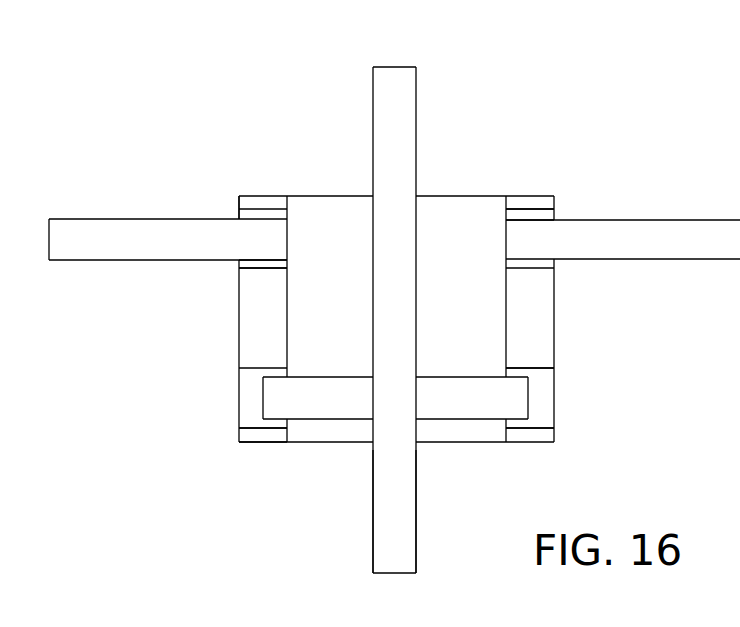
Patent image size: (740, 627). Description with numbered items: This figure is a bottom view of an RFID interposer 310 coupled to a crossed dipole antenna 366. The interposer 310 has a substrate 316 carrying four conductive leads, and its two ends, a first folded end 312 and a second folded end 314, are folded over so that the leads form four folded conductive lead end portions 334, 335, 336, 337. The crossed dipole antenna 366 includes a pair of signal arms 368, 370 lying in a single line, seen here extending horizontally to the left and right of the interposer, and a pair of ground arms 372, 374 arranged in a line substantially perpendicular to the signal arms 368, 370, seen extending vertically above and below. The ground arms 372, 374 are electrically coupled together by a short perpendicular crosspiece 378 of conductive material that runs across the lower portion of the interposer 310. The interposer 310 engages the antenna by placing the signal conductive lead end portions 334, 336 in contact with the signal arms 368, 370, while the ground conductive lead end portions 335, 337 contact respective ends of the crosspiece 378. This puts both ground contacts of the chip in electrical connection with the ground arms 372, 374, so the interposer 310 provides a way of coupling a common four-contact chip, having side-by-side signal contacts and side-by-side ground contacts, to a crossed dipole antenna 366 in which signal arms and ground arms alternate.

The crossed dipole antenna 366 is at (326, 82).
The ground arm 372 is at (400, 80).
The ground arm 374 is at (393, 528).
The substrate 316 is at (466, 188).
The interposer 310 is at (229, 173).
The folded end 312 is at (221, 194).
The folded end 314 is at (567, 181).
The signal conductive lead end portion 334 is at (238, 262).
The ground conductive lead end portion 335 is at (243, 433).
The signal conductive lead end portion 336 is at (545, 213).
The ground conductive lead end portion 337 is at (547, 400).
The crosspiece 378 is at (452, 403).
The signal arm 368 is at (93, 247).
The signal arm 370 is at (675, 243).